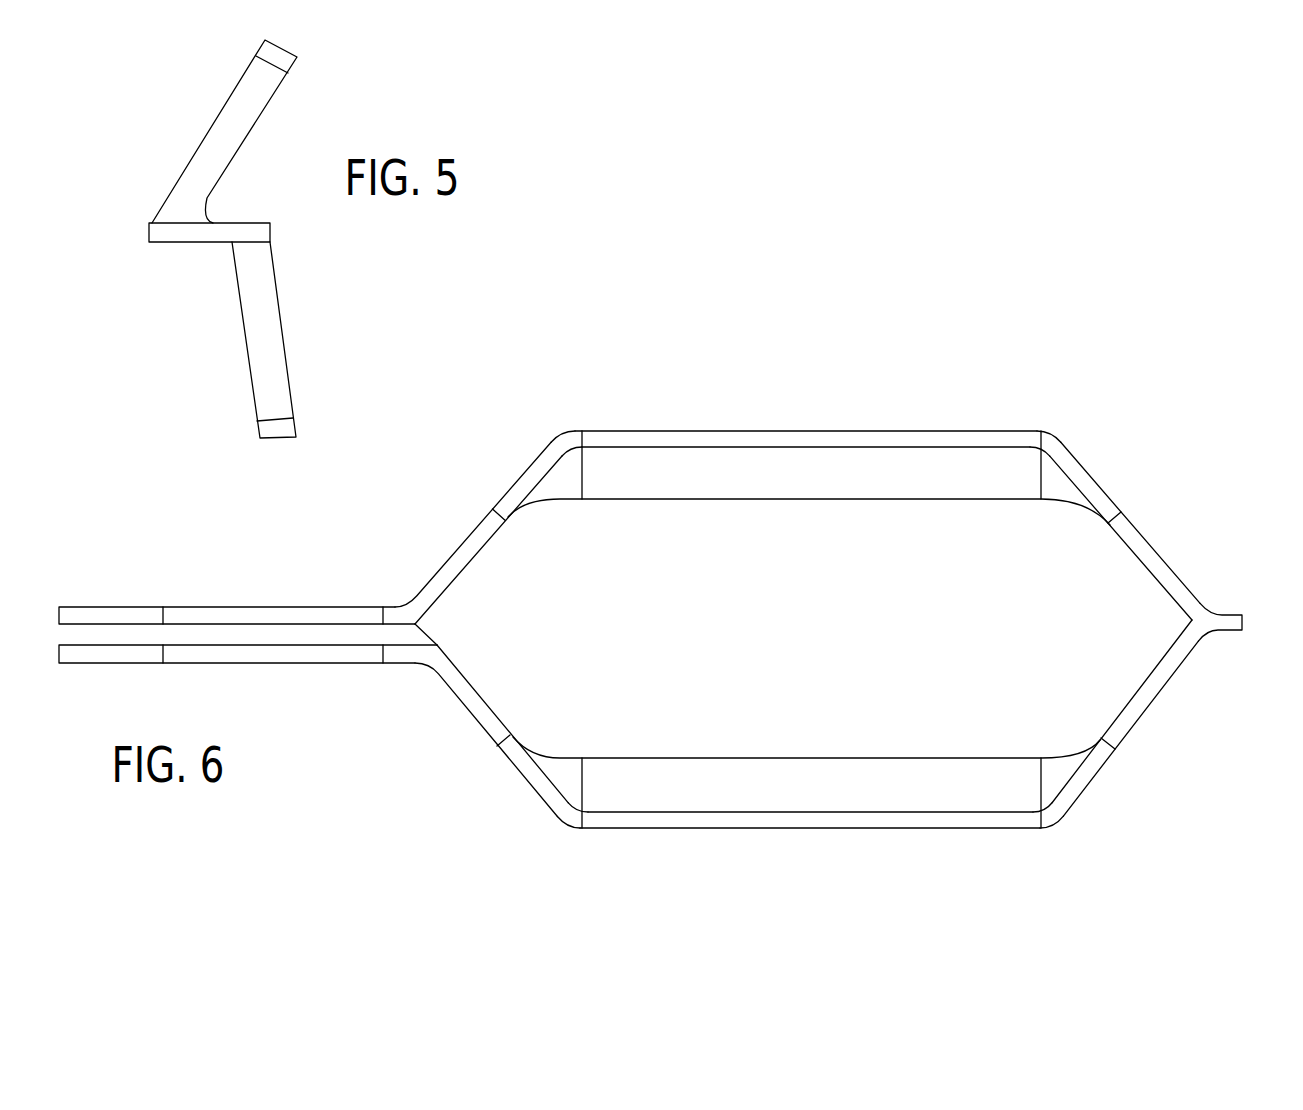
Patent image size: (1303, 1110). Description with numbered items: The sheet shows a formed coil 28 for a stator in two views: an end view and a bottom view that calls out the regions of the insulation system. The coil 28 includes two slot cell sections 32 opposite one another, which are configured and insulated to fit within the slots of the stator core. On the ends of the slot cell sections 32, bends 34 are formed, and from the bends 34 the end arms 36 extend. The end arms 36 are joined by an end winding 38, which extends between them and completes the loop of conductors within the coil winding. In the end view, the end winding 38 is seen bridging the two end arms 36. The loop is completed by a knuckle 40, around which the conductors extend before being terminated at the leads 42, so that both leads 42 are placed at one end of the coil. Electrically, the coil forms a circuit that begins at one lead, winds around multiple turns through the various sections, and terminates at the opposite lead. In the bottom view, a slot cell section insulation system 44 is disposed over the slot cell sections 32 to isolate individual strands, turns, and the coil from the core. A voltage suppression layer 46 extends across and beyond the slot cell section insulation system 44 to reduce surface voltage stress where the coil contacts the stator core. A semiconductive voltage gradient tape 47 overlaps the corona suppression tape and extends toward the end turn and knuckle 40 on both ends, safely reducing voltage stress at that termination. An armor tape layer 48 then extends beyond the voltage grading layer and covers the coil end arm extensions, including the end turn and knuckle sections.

In FIG. 5, the coil 28 is at (306, 115).
In FIG. 6, the coil 28 is at (366, 737).
In FIG. 6, the slot cell sections 32 is at (812, 433).
In FIG. 6, the bends 34 is at (560, 430).
In FIG. 5, the end arms 36 is at (236, 120).
In FIG. 6, the end arms 36 is at (1097, 477).
In FIG. 5, the end winding 38 is at (202, 233).
In FIG. 6, the end winding 38 is at (1243, 620).
In FIG. 6, the knuckle 40 is at (427, 638).
In FIG. 6, the leads 42 is at (103, 650).
In FIG. 6, the slot cell section insulation system 44 is at (690, 433).
In FIG. 6, the voltage suppression layer 46 is at (573, 437).
In FIG. 6, the semiconductive voltage gradient tape 47 is at (528, 477).
In FIG. 6, the armor tape layer 48 is at (468, 547).